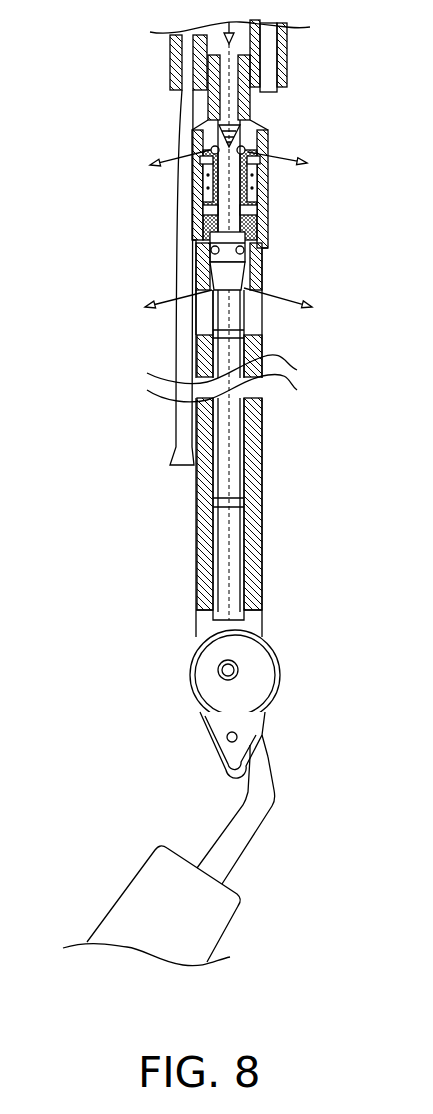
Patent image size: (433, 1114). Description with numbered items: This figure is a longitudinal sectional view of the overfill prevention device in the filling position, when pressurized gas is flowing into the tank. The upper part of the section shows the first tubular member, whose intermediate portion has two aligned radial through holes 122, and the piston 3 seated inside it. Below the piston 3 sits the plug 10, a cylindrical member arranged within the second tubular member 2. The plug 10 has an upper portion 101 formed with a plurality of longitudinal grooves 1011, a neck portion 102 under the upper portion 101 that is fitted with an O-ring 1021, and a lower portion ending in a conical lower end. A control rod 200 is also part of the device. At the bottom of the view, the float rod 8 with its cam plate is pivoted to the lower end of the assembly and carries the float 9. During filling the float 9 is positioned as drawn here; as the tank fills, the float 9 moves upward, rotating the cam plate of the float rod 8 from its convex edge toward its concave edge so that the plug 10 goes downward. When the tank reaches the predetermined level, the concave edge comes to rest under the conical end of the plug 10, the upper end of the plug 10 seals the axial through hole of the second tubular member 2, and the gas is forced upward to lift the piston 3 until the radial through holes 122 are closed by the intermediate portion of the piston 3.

The radial through holes 122 is at (200, 140).
The upper portion 101 is at (200, 210).
The plug 10 is at (195, 233).
The O-ring 1021 is at (195, 245).
The neck portion 102 is at (196, 258).
The second tubular member 2 is at (195, 268).
The longitudinal grooves 1011 is at (203, 312).
The piston 3 is at (273, 167).
The control rod 200 is at (232, 353).
The float 9 is at (140, 885).
The float rod 8 is at (230, 838).